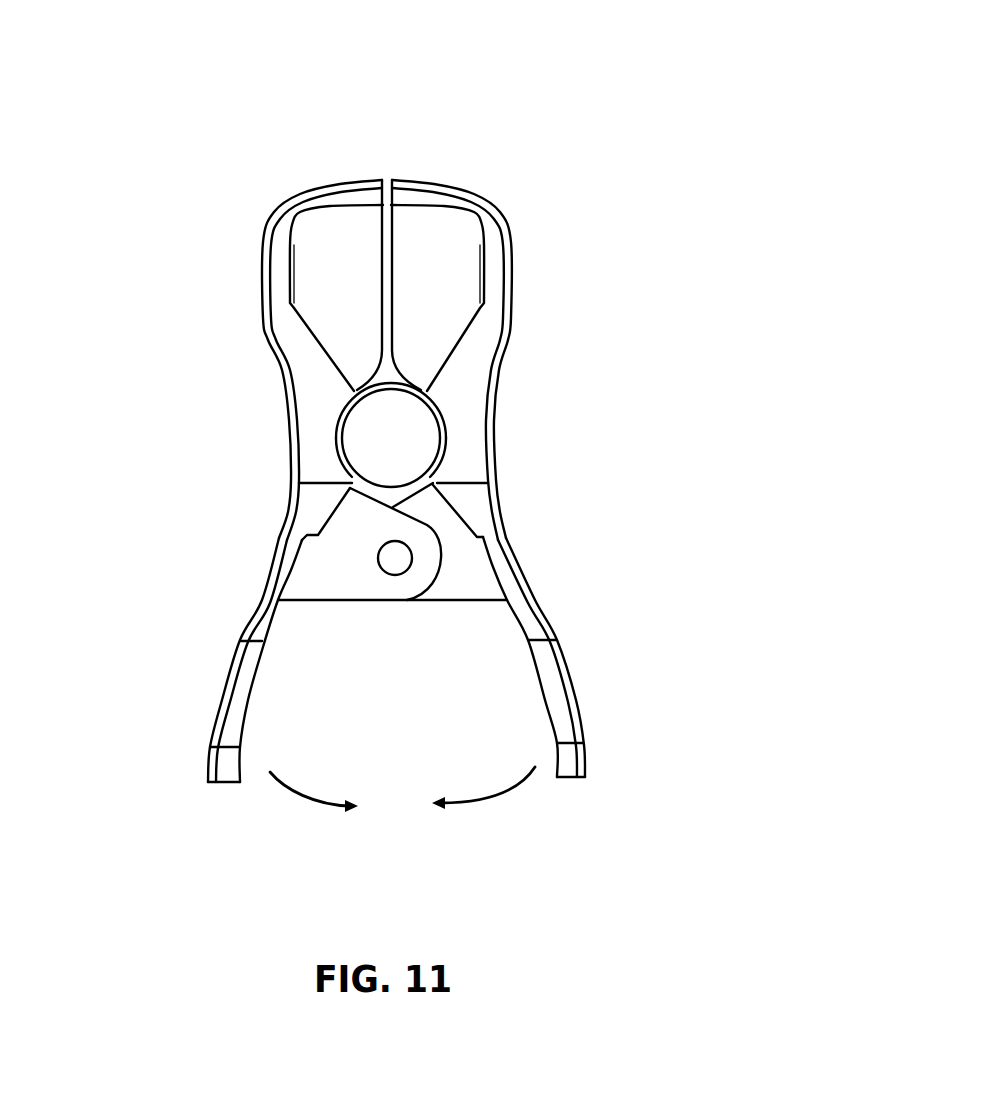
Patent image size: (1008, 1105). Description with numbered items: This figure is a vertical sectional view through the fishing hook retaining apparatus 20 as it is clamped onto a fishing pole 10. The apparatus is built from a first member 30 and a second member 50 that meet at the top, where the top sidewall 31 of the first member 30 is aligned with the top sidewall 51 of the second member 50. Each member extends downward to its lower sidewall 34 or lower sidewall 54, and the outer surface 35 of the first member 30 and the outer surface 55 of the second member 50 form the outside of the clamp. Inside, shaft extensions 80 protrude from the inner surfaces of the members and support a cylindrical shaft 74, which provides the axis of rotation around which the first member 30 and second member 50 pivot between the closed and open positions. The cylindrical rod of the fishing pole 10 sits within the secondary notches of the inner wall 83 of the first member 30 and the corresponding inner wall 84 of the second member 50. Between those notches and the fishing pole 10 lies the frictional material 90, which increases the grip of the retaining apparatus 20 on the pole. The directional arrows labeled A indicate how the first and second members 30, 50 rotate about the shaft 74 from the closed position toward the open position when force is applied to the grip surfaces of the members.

The fishing hook retaining apparatus 20 is at (669, 113).
The first member 30 is at (535, 215).
The top sidewall 31 is at (417, 178).
The lower sidewall 34 is at (570, 785).
The outer surface 35 is at (483, 538).
The second member 50 is at (222, 229).
The top sidewall 51 is at (365, 177).
The lower sidewall 54 is at (223, 785).
The outer surface 55 is at (280, 540).
The fishing pole 10 is at (392, 439).
The shaft 74 is at (398, 563).
The shaft extensions 80 is at (337, 553).
The inner wall 83 is at (446, 452).
The inner wall 84 is at (345, 468).
The frictional material 90 is at (333, 425).